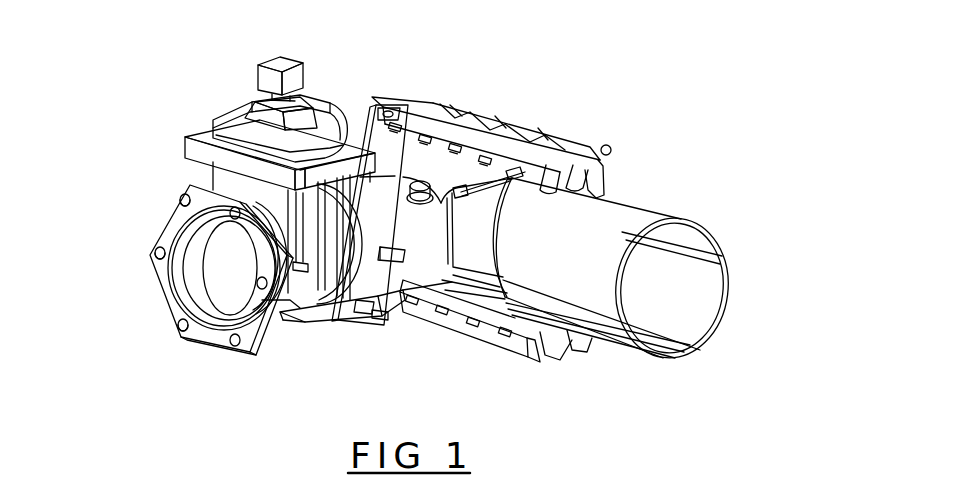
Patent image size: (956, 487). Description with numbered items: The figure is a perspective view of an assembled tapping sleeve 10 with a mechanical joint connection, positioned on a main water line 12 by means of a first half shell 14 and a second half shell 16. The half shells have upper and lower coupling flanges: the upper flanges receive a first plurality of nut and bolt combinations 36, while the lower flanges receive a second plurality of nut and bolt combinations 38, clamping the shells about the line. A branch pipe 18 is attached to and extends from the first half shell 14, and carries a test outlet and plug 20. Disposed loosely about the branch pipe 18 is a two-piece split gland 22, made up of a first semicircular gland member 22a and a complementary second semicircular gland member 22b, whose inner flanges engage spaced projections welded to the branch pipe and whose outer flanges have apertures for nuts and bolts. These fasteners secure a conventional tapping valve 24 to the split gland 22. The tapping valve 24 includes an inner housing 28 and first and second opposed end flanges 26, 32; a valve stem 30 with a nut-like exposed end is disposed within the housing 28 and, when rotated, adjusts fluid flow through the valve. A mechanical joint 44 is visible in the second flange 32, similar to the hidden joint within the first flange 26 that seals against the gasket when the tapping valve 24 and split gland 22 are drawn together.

The tapping sleeve 10 is at (503, 64).
The main water line 12 is at (587, 263).
The first half shell 14 is at (501, 235).
The second half shell 16 is at (568, 143).
The branch pipe 18 is at (445, 235).
The test outlet and plug 20 is at (425, 182).
The two-piece split gland 22 is at (402, 194).
The first semicircular gland member 22a is at (385, 110).
The second semicircular gland member 22b is at (392, 318).
The tapping valve 24 is at (160, 124).
The first end flange 26 is at (340, 315).
The inner housing 28 is at (222, 178).
The valve stem 30 is at (268, 74).
The second end flange 32 is at (208, 340).
The first plurality of nut and bolt combinations 36 is at (530, 150).
The second plurality of nut and bolt combinations 38 is at (472, 327).
The mechanical joint 44 is at (183, 265).